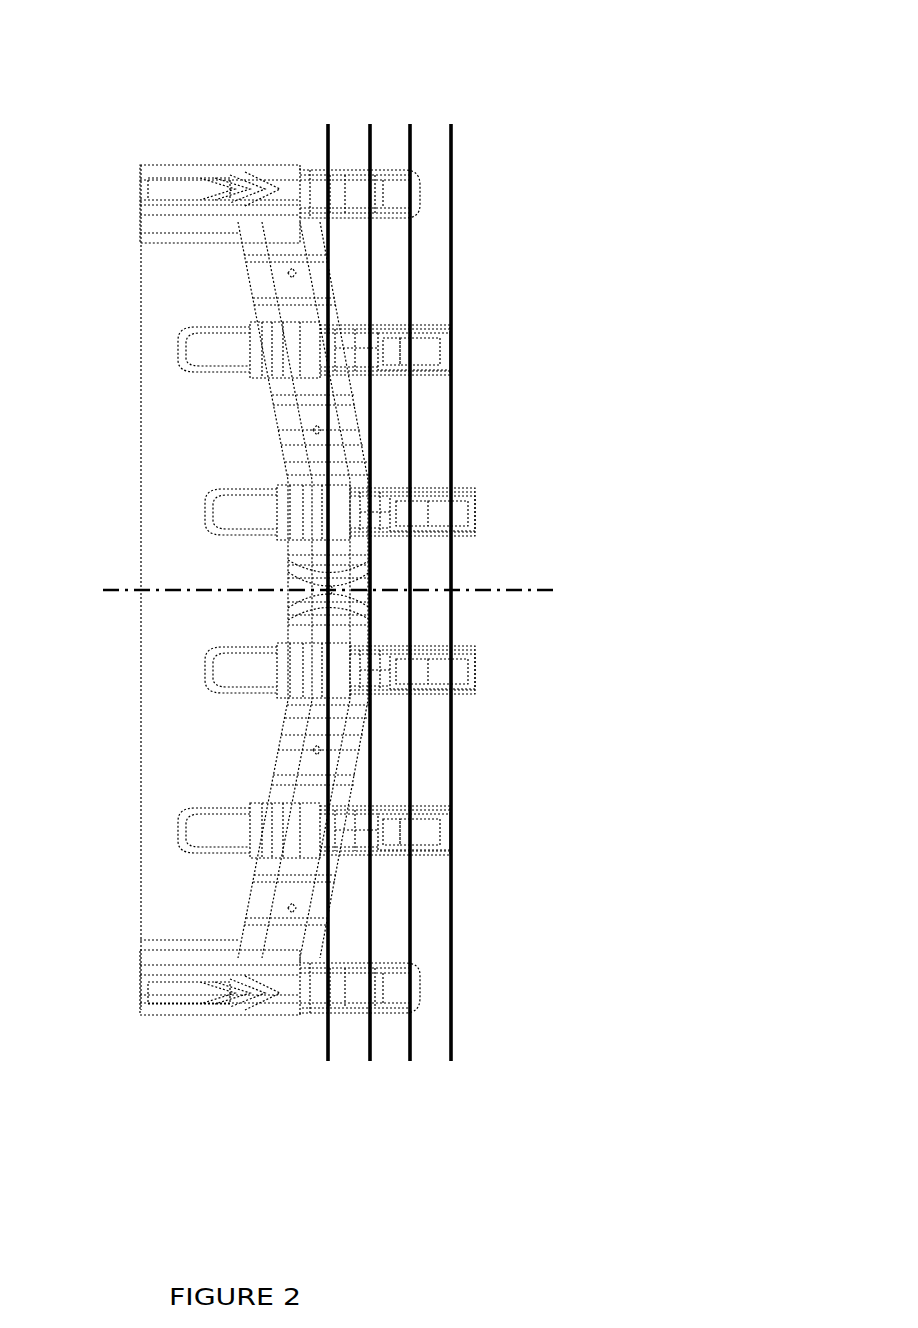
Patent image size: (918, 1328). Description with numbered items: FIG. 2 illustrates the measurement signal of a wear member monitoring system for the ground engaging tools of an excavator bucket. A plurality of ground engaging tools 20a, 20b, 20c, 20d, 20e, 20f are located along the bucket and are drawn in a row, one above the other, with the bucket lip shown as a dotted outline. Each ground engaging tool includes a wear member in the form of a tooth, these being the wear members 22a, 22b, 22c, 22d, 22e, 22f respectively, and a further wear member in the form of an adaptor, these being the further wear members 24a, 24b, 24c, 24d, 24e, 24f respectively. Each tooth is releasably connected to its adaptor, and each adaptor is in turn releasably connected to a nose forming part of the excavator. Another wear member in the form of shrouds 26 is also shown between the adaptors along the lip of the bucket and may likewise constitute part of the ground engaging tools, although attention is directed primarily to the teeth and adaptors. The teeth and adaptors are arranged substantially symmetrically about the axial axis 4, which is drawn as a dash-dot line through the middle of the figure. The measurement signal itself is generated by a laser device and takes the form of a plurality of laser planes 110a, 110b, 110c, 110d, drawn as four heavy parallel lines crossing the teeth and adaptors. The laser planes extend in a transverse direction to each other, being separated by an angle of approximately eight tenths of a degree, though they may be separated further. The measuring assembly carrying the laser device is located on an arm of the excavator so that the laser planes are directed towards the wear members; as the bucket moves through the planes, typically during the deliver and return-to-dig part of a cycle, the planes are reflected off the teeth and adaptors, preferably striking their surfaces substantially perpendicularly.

The axial axis 4 is at (120, 588).
The ground engaging tool 20a is at (494, 207).
The ground engaging tool 20b is at (558, 331).
The ground engaging tool 20c is at (602, 491).
The ground engaging tool 20d is at (611, 673).
The ground engaging tool 20e is at (583, 846).
The ground engaging tool 20f is at (481, 988).
The wear member 22a is at (388, 168).
The wear member 22b is at (425, 343).
The wear member 22c is at (465, 513).
The wear member 22d is at (468, 672).
The wear member 22e is at (425, 835).
The wear member 22f is at (388, 992).
The further wear member 24a is at (310, 192).
The further wear member 24b is at (345, 355).
The further wear member 24c is at (385, 505).
The further wear member 24d is at (380, 678).
The further wear member 24e is at (345, 828).
The further wear member 24f is at (310, 993).
The shrouds 26 is at (285, 430).
The laser plane 110a is at (450, 167).
The laser plane 110b is at (410, 137).
The laser plane 110c is at (370, 138).
The laser plane 110d is at (328, 150).